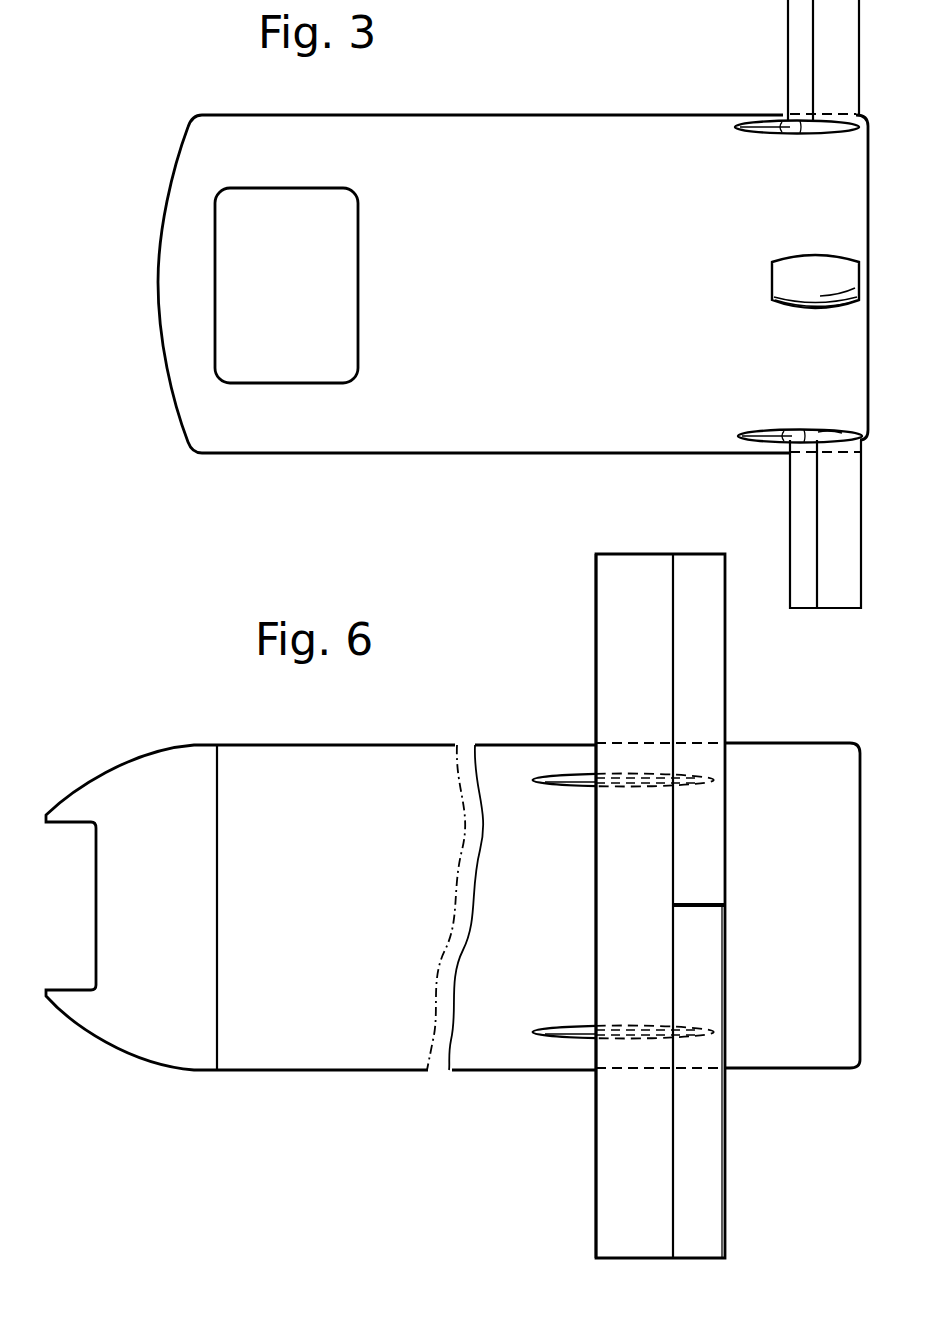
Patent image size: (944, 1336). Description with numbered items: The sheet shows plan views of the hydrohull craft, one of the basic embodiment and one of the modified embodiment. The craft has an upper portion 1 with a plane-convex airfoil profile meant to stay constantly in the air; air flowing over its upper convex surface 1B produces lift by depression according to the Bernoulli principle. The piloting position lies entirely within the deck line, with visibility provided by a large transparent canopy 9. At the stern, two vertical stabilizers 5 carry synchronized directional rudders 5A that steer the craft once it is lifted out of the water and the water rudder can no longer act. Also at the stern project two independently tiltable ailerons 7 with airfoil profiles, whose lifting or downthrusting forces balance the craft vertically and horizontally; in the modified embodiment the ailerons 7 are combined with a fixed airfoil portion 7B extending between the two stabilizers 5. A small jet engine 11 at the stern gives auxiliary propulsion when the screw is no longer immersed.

In FIG. 3, the upper portion 1 is at (516, 426).
In FIG. 6, the upper portion 1 is at (410, 757).
In FIG. 3, the upper convex surface 1B is at (570, 291).
In FIG. 3, the vertical stabilizer 5 is at (797, 432).
In FIG. 3, the directional rudder 5A is at (828, 436).
In FIG. 3, the aileron 7 is at (828, 32).
In FIG. 6, the aileron 7 is at (715, 672).
In FIG. 6, the fixed airfoil portion 7B is at (610, 628).
In FIG. 3, the transparent canopy 9 is at (350, 207).
In FIG. 3, the jet engine 11 is at (790, 262).